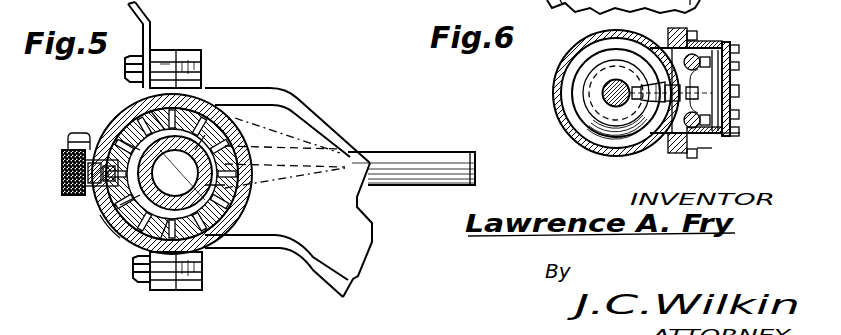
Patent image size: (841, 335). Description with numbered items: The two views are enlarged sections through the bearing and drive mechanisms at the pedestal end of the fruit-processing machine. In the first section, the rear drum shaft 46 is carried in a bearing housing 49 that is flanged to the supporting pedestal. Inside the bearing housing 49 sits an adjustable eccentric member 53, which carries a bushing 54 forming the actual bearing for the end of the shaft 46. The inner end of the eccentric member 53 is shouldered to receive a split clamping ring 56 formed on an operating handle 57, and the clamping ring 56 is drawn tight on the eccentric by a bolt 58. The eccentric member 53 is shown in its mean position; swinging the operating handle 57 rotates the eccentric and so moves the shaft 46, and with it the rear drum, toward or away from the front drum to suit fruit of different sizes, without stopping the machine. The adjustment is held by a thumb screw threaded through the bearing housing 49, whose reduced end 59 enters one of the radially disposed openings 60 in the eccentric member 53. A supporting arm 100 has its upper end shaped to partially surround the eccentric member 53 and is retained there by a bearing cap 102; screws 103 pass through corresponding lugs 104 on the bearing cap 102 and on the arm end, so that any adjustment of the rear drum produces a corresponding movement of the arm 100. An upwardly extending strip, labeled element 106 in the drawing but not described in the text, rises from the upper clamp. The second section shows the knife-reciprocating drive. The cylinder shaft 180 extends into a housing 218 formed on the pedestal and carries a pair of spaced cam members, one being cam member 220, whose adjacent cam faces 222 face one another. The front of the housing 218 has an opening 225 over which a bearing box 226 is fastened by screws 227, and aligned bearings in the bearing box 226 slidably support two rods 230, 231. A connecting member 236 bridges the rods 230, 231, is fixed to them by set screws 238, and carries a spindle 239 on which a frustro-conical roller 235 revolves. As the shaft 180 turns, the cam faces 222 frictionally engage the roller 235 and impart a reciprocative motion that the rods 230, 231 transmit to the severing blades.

In FIG. 5, the rear drum shaft 46 is at (236, 112).
In FIG. 5, the bearing housing 49 is at (248, 142).
In FIG. 5, the eccentric member 53 is at (240, 205).
In FIG. 5, the bushing 54 is at (236, 177).
In FIG. 5, the split clamping ring 56 is at (215, 100).
In FIG. 5, the operating handle 57 is at (401, 178).
In FIG. 5, the bolt 58 is at (63, 176).
In FIG. 5, the reduced end 59 is at (111, 213).
In FIG. 5, the radially disposed opening 60 is at (112, 140).
In FIG. 5, the supporting arm 100 is at (350, 246).
In FIG. 5, the bearing cap 102 is at (121, 238).
In FIG. 5, the screw 103 is at (130, 70).
In FIG. 5, the lug 104 is at (188, 52).
In FIG. 5, the support arm 106 is at (150, 12).
In FIG. 6, the cylinder shaft 180 is at (610, 98).
In FIG. 6, the housing 218 is at (566, 98).
In FIG. 6, the cam member 220 is at (583, 81).
In FIG. 6, the cam face 222 is at (594, 128).
In FIG. 6, the opening 225 is at (668, 142).
In FIG. 6, the bearing box 226 is at (710, 146).
In FIG. 6, the screw 227 is at (697, 35).
In FIG. 6, the sliding rod 230 is at (730, 47).
In FIG. 6, the sliding rod 231 is at (715, 141).
In FIG. 6, the frustro-conical roller 235 is at (642, 135).
In FIG. 6, the connecting member 236 is at (680, 102).
In FIG. 6, the set screw 238 is at (712, 62).
In FIG. 6, the spindle 239 is at (660, 46).